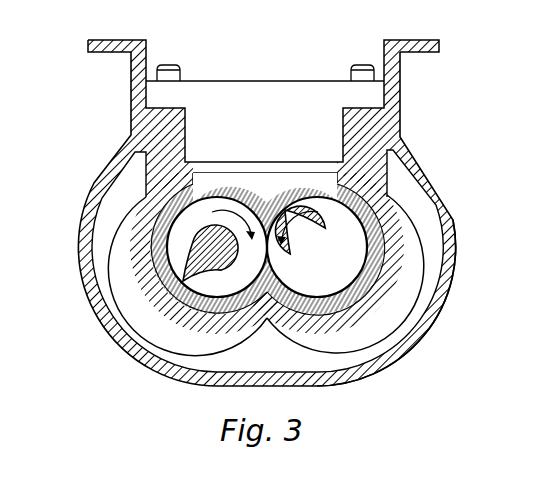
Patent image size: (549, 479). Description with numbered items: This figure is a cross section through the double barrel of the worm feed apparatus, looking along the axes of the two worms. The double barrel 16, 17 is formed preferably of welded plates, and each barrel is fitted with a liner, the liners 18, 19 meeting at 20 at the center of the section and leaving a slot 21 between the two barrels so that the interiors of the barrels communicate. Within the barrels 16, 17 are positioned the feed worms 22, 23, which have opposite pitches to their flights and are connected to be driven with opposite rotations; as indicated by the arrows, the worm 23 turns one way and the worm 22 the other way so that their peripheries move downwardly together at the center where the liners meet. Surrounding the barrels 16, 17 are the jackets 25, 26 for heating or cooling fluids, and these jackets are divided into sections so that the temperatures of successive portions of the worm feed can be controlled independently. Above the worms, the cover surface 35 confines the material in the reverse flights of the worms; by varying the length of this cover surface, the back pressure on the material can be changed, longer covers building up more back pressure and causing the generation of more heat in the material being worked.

The barrel 16 is at (401, 223).
The barrel 17 is at (168, 262).
The liner 18 is at (305, 274).
The liner 19 is at (148, 297).
The meeting point of liners 20 is at (307, 282).
The slot 21 is at (178, 333).
The feed worm 22 is at (318, 213).
The feed worm 23 is at (216, 245).
The jacket 25 is at (455, 248).
The jacket 26 is at (90, 180).
The cover surface 35 is at (248, 192).